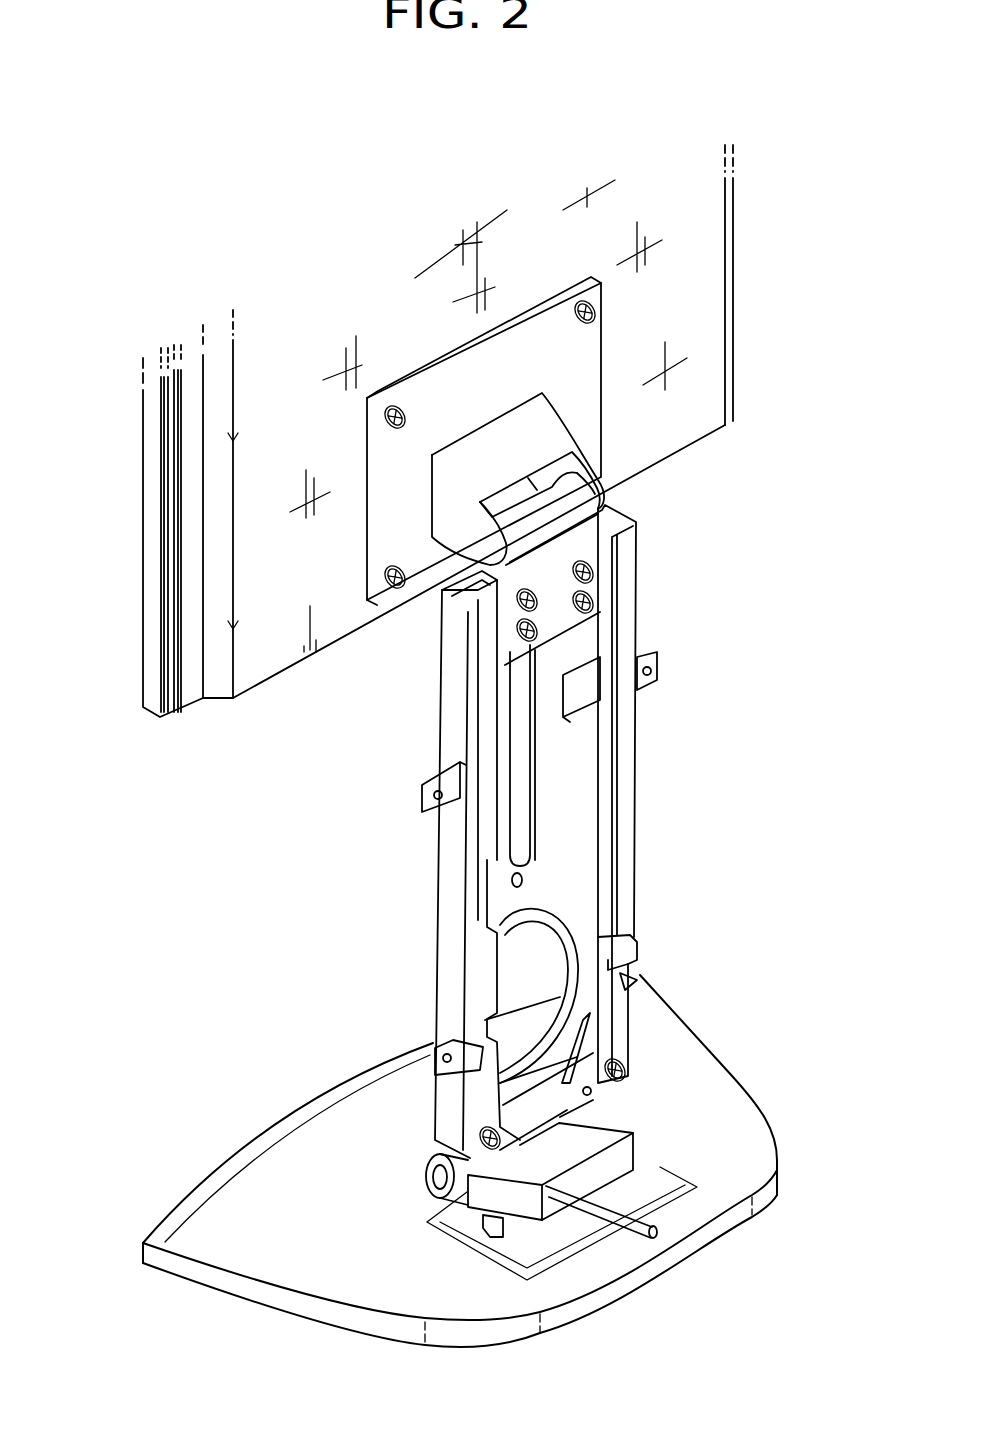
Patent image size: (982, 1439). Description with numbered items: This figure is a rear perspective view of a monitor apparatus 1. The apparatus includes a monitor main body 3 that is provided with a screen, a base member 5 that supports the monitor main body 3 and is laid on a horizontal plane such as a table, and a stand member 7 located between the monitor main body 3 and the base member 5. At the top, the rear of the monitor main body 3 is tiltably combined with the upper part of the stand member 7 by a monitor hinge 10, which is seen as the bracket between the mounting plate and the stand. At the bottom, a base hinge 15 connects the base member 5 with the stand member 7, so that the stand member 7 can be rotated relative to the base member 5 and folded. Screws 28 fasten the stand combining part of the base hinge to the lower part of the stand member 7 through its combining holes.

The monitor apparatus 1 is at (178, 262).
The monitor main body 3 is at (700, 317).
The base member 5 is at (260, 1135).
The stand member 7 is at (628, 777).
The monitor hinge 10 is at (625, 497).
The base hinge 15 is at (660, 1078).
The screws 28 is at (500, 1140).